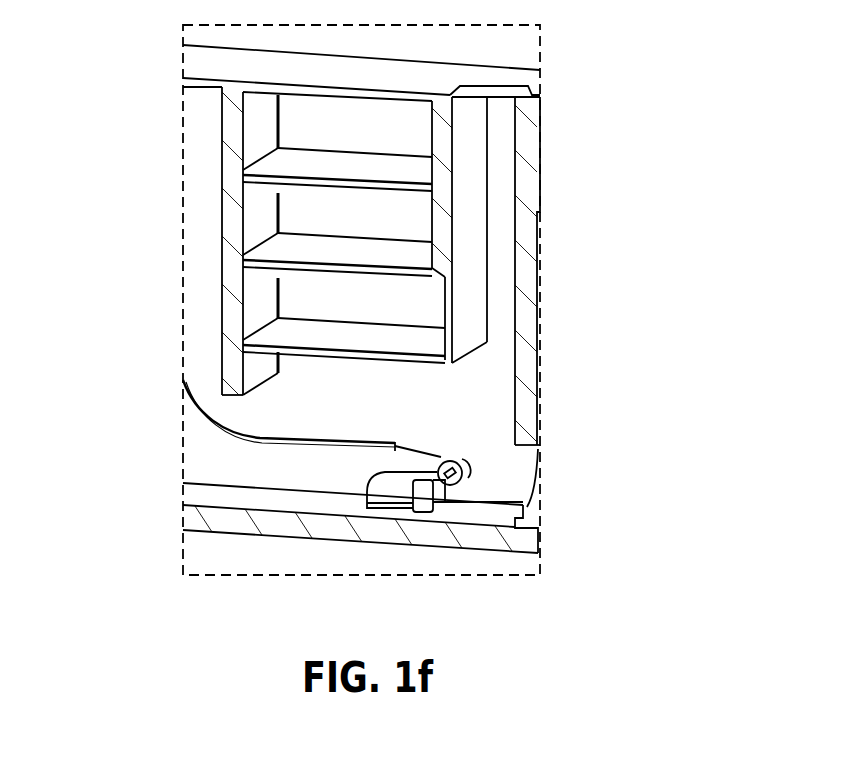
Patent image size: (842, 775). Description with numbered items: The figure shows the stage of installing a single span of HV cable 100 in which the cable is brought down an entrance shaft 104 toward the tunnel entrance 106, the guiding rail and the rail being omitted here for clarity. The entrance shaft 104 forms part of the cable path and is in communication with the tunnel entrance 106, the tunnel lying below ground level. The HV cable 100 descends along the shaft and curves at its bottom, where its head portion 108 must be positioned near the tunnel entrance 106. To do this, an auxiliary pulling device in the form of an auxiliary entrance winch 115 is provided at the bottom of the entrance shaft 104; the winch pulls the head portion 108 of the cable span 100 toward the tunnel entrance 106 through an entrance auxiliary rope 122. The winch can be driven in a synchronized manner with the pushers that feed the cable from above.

The HV cable 100 is at (203, 413).
The entrance shaft 104 is at (203, 218).
The tunnel entrance 106 is at (517, 472).
The head portion 108 is at (398, 446).
The auxiliary entrance winch 115 is at (452, 474).
The entrance auxiliary rope 122 is at (403, 450).